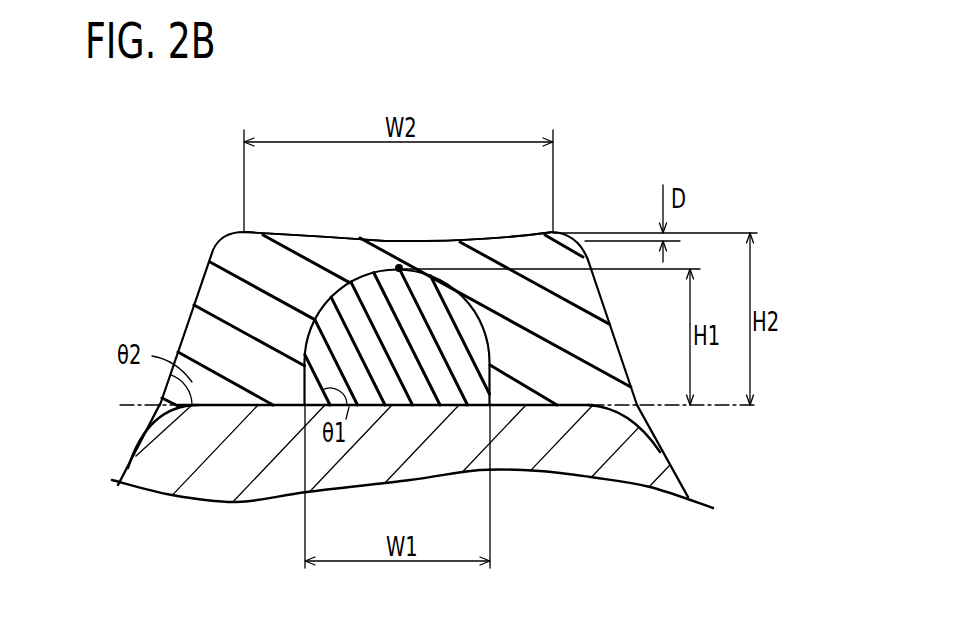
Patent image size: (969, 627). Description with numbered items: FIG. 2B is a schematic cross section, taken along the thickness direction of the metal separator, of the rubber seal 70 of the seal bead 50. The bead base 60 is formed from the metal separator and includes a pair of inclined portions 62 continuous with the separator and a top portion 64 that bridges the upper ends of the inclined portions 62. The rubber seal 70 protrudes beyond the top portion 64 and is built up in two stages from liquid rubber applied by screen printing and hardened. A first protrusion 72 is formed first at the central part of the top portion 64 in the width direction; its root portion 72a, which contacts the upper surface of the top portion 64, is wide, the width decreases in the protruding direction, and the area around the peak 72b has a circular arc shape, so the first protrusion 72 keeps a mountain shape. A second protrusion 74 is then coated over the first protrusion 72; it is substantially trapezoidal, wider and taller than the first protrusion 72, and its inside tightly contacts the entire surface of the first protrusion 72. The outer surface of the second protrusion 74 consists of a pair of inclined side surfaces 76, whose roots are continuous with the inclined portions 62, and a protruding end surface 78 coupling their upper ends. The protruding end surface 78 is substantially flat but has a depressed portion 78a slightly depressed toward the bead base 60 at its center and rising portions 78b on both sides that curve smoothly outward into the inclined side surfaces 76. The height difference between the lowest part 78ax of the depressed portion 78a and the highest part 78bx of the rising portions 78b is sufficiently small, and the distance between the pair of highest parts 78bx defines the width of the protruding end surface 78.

The joint structure 50 is at (137, 198).
The bead base 60 is at (390, 465).
The inclined portions 62 is at (648, 462).
The top portion 64 is at (452, 458).
The rubber seal 70 is at (395, 310).
The first protrusion 72 is at (421, 303).
The root portion 72a is at (407, 407).
The peak 72b is at (400, 266).
The second protrusion 74 is at (223, 297).
The inclined side surfaces 76 is at (606, 313).
The protruding end surface 78 is at (423, 212).
The depressed portion 78a is at (358, 238).
The lowest part 78ax is at (398, 240).
The rising portions 78b is at (248, 230).
The highest part 78bx is at (553, 232).